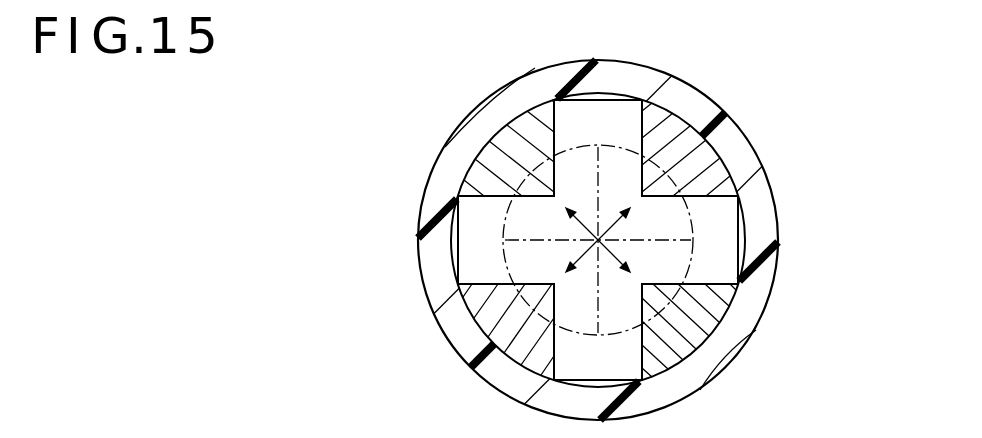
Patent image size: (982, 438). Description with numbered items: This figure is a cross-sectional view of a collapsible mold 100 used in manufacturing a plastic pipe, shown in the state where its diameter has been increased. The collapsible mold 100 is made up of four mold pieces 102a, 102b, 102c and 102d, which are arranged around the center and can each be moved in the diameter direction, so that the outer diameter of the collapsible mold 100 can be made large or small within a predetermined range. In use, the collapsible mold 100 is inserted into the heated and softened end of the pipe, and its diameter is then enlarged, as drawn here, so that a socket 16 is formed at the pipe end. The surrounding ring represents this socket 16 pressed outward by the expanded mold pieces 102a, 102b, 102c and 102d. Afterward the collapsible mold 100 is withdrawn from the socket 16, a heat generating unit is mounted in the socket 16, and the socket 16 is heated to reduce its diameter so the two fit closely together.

The socket 16 is at (658, 67).
The collapsible mold 100 is at (724, 243).
The mold piece 102a is at (697, 152).
The mold piece 102b is at (700, 325).
The mold piece 102c is at (503, 327).
The mold piece 102d is at (517, 138).